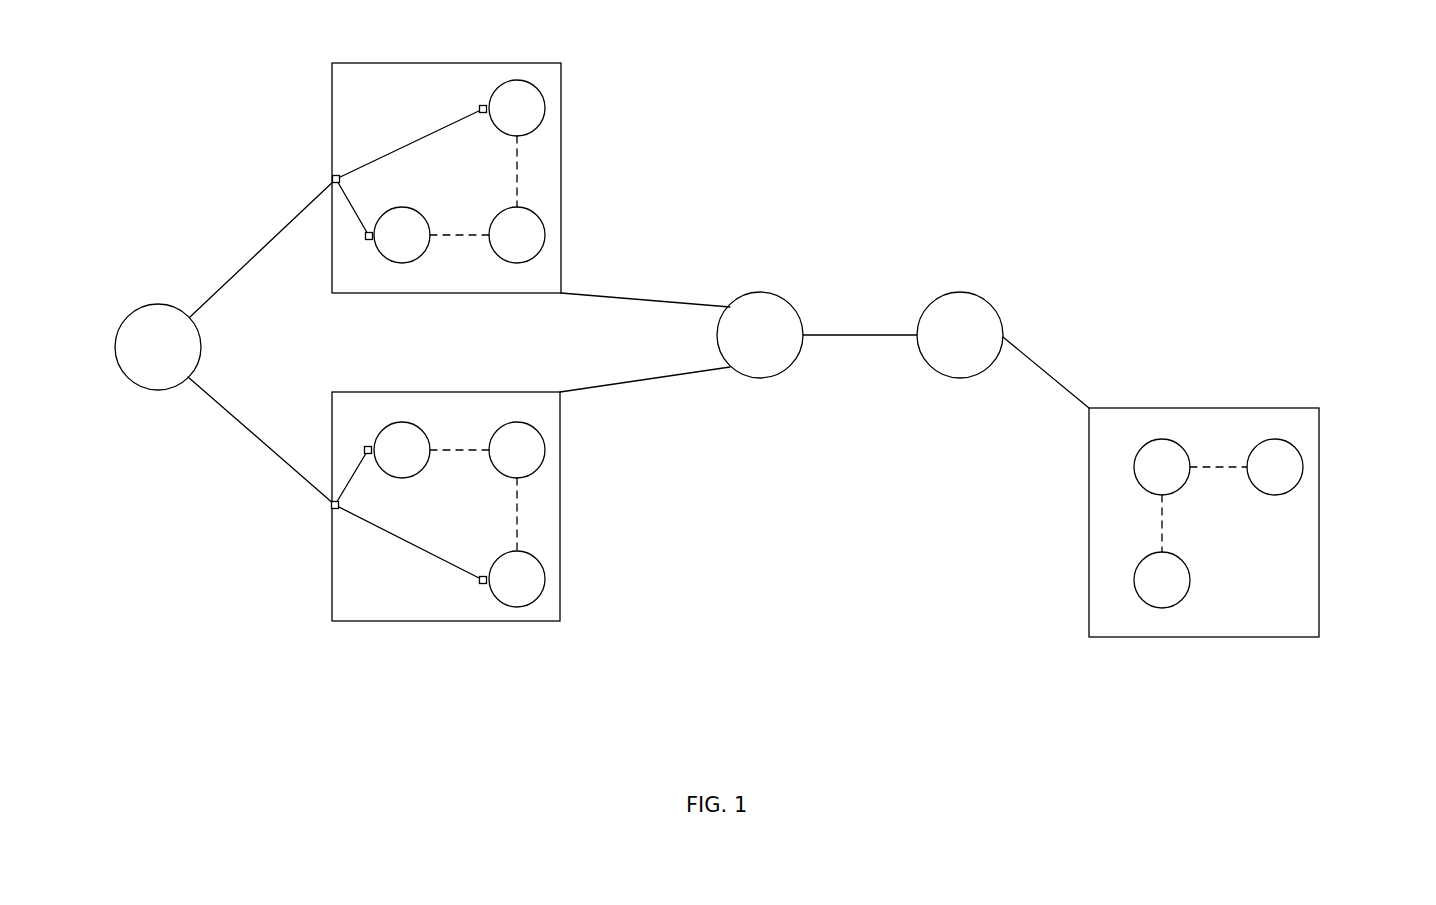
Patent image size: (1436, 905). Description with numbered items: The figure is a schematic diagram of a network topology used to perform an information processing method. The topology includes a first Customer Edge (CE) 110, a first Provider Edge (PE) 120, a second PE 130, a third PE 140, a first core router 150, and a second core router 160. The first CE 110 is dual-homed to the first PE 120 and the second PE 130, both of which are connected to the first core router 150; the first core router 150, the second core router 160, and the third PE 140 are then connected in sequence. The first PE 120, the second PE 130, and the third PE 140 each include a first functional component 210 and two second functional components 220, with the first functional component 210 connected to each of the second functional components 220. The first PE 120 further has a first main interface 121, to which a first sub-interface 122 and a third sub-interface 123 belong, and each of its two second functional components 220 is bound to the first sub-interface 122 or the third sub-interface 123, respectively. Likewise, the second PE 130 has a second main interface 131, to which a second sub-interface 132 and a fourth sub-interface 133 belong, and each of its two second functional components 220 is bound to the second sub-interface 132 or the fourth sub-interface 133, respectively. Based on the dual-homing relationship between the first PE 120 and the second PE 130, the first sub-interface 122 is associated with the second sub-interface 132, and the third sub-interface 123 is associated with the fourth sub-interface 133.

The first Customer Edge (CE) 110 is at (127, 317).
The first Provider Edge (PE) 120 is at (560, 168).
The first main interface 121 is at (338, 176).
The first sub-interface 122 is at (482, 105).
The third sub-interface 123 is at (368, 242).
The second Provider Edge (PE) 130 is at (560, 505).
The second main interface 131 is at (333, 518).
The second sub-interface 132 is at (480, 592).
The fourth sub-interface 133 is at (368, 447).
The third Provider Edge (PE) 140 is at (1319, 518).
The first core router 150 is at (758, 292).
The second core router 160 is at (962, 292).
The first functional component 210 is at (546, 227).
The second functional component 220 is at (545, 108).